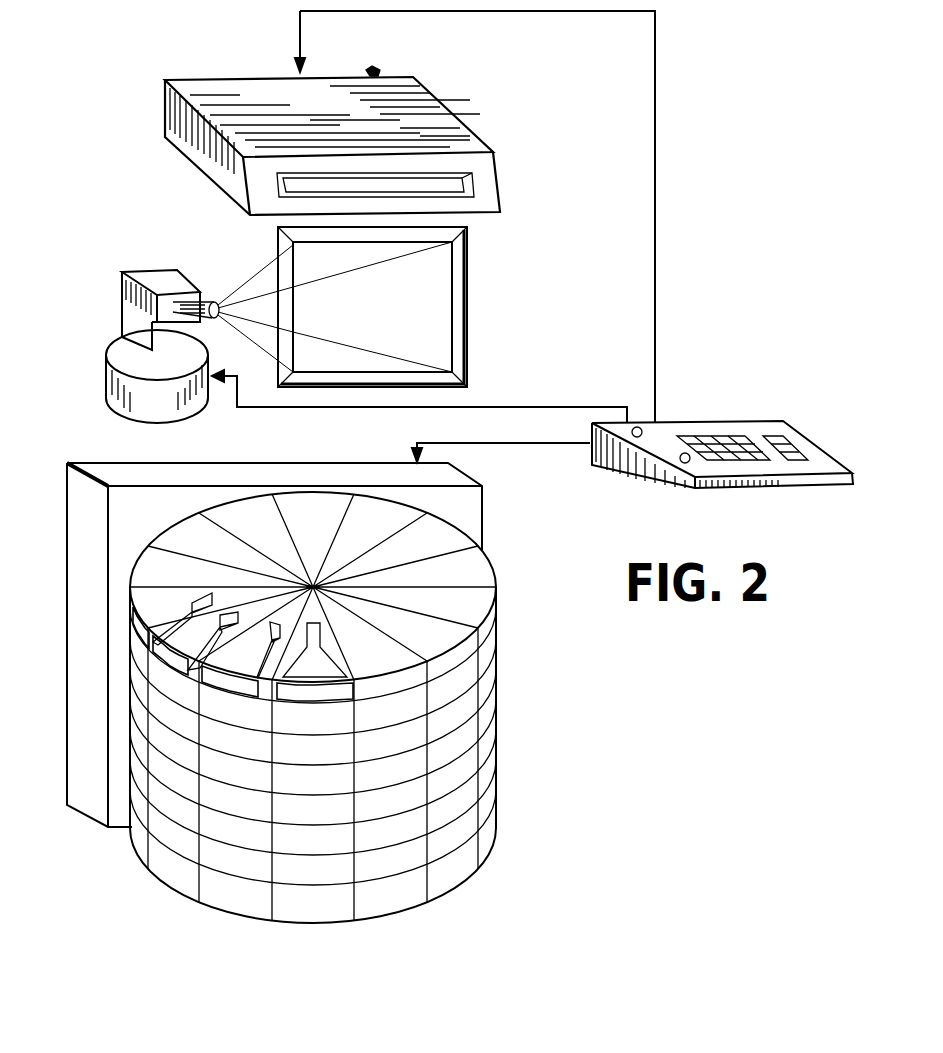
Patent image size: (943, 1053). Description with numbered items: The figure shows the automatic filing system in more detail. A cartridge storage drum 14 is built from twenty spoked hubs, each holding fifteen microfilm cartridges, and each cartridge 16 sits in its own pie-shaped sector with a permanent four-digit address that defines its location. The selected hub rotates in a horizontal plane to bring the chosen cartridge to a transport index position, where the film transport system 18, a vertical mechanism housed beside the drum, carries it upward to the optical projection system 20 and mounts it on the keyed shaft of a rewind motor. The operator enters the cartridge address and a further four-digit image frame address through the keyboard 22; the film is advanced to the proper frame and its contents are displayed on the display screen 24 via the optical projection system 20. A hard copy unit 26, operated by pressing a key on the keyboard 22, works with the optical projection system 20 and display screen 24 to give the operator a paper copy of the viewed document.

The cartridge storage drum 14 is at (497, 665).
The cartridge 16 is at (135, 627).
The film transport system 18 is at (93, 473).
The optical projection system 20 is at (130, 297).
The keyboard 22 is at (760, 428).
The display screen 24 is at (448, 305).
The hard copy unit 26 is at (256, 90).